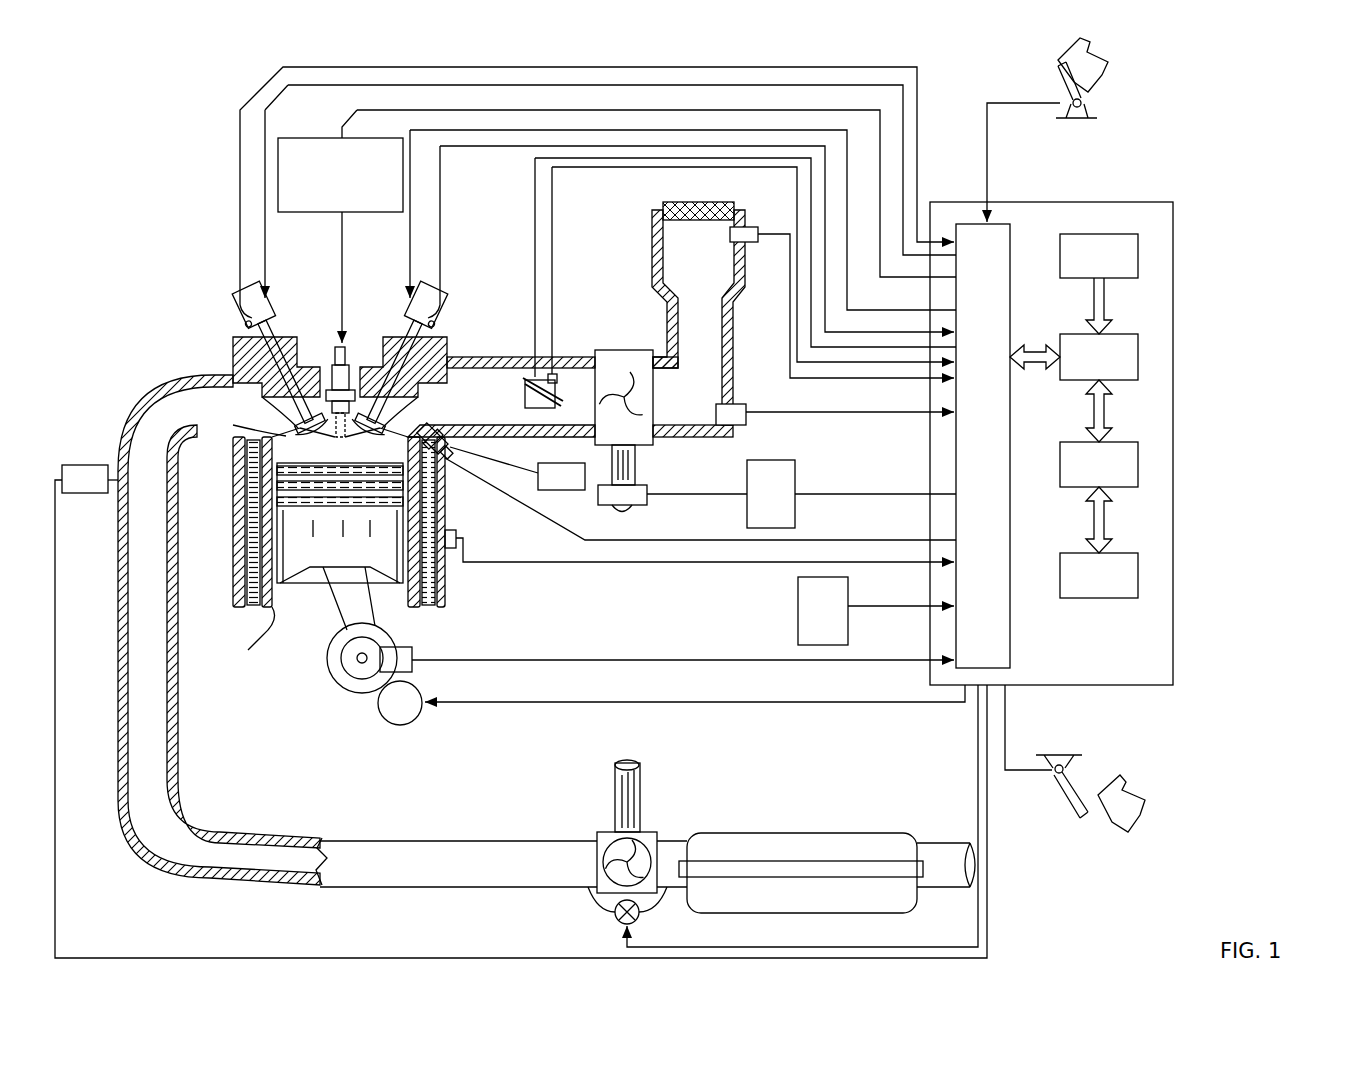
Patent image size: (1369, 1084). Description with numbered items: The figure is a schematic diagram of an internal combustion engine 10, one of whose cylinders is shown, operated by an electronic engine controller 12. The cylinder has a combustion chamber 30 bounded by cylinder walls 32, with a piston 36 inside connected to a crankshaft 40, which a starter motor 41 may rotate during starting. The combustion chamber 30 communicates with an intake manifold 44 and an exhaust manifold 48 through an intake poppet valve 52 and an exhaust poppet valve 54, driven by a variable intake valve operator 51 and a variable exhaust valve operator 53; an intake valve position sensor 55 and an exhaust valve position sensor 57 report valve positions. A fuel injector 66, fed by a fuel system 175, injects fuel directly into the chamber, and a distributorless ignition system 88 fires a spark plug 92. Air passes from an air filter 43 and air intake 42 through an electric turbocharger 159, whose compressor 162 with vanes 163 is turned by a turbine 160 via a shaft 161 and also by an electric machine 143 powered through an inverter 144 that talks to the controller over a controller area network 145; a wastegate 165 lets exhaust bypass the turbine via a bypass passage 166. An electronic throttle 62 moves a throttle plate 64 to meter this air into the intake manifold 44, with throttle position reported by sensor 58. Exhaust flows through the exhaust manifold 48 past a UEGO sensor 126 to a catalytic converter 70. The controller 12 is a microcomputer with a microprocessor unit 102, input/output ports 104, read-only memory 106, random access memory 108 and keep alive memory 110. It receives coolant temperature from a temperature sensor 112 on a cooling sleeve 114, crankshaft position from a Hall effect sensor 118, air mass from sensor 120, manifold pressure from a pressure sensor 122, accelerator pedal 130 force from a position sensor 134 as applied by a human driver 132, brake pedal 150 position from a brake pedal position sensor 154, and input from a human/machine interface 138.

The internal combustion engine 10 is at (160, 282).
The electronic engine controller 12 is at (1175, 202).
The combustion chamber 30 is at (333, 448).
The cylinder walls 32 is at (265, 600).
The piston 36 is at (322, 550).
The crankshaft 40 is at (350, 680).
The starter motor 41 is at (392, 723).
The air intake 42 is at (714, 261).
The air filter 43 is at (660, 205).
The intake manifold 44 is at (489, 412).
The exhaust manifold 48 is at (212, 417).
The variable intake valve operator 51 is at (406, 308).
The intake poppet valve 52 is at (392, 400).
The variable exhaust valve operator 53 is at (272, 312).
The exhaust poppet valve 54 is at (262, 398).
The intake valve position sensor 55 is at (422, 320).
The exhaust valve position sensor 57 is at (252, 318).
The throttle position sensor 58 is at (557, 378).
The electronic throttle 62 is at (536, 410).
The throttle plate 64 is at (530, 380).
The fuel injector 66 is at (437, 470).
The catalytic converter 70 is at (735, 833).
The distributorless ignition system 88 is at (290, 138).
The spark plug 92 is at (343, 345).
The microprocessor unit 102 is at (1140, 360).
The input/output ports 104 is at (1012, 233).
The read-only memory 106 is at (1140, 260).
The random access memory 108 is at (1140, 465).
The keep alive memory 110 is at (1140, 575).
The temperature sensor 112 is at (457, 538).
The cooling sleeve 114 is at (447, 565).
The Hall effect sensor 118 is at (412, 652).
The air mass sensor 120 is at (742, 227).
The pressure sensor 122 is at (740, 425).
The Universal Exhaust Gas Oxygen sensor 126 is at (82, 465).
The accelerator pedal 130 is at (1055, 84).
The human driver 132 is at (1112, 65).
The position sensor 134 is at (1100, 118).
The human/machine interface 138 is at (876, 611).
The electric machine 143 is at (640, 512).
The inverter 144 is at (771, 494).
The controller area network 145 is at (800, 490).
The brake pedal 150 is at (1085, 814).
The brake pedal position sensor 154 is at (1038, 767).
The electric turbocharger 159 is at (612, 336).
The turbine 160 is at (657, 832).
The shaft 161 is at (636, 462).
The compressor 162 is at (628, 350).
The vanes 163 is at (638, 396).
The wastegate 165 is at (616, 921).
The bypass passage 166 is at (598, 896).
The fuel system 175 is at (561, 476).